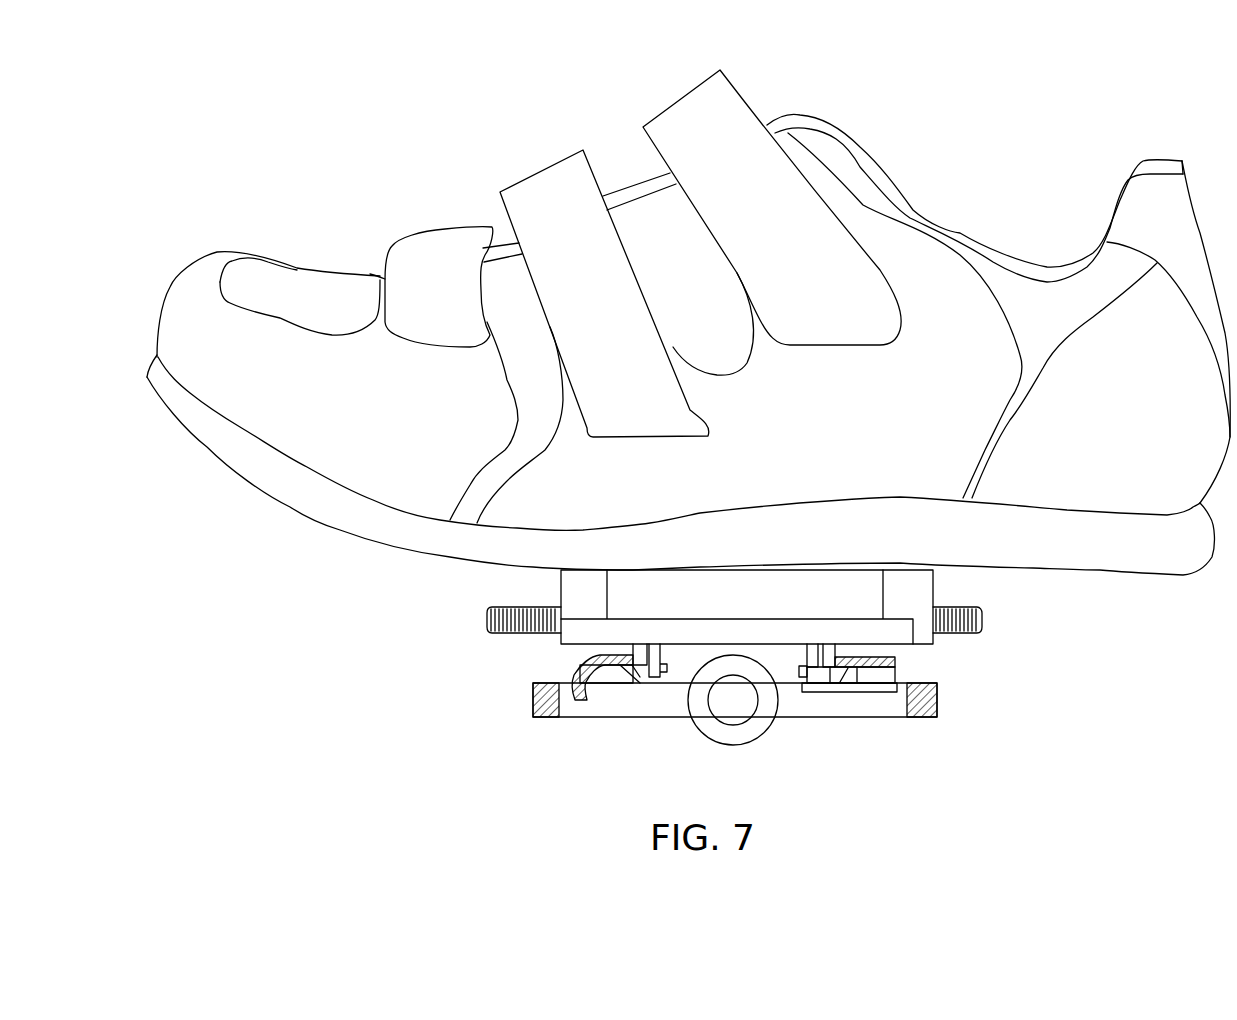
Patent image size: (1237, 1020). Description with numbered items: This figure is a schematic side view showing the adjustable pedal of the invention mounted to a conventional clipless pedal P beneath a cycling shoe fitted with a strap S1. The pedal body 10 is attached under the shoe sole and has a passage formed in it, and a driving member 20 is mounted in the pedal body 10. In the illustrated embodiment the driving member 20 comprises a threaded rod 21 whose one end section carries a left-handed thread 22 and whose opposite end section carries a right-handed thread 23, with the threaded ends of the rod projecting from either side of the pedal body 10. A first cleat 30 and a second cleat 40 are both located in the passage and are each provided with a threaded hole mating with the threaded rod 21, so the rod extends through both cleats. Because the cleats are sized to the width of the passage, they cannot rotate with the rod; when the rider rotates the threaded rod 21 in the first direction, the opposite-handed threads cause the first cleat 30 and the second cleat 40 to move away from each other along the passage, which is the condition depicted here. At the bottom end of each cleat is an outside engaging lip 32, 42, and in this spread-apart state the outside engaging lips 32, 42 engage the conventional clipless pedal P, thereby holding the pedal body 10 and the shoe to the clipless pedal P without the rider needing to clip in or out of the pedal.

The strap S1 is at (552, 190).
The pedal body 10 is at (915, 578).
The driving member 20 is at (1002, 625).
The threaded rod 21 is at (978, 632).
The left-handed thread 22 is at (980, 610).
The right-handed thread 23 is at (487, 617).
The first cleat 30 is at (604, 704).
The outside engaging lip 32 is at (620, 670).
The second cleat 40 is at (829, 701).
The outside engaging lip 42 is at (837, 673).
The conventional clipless pedal P is at (895, 713).